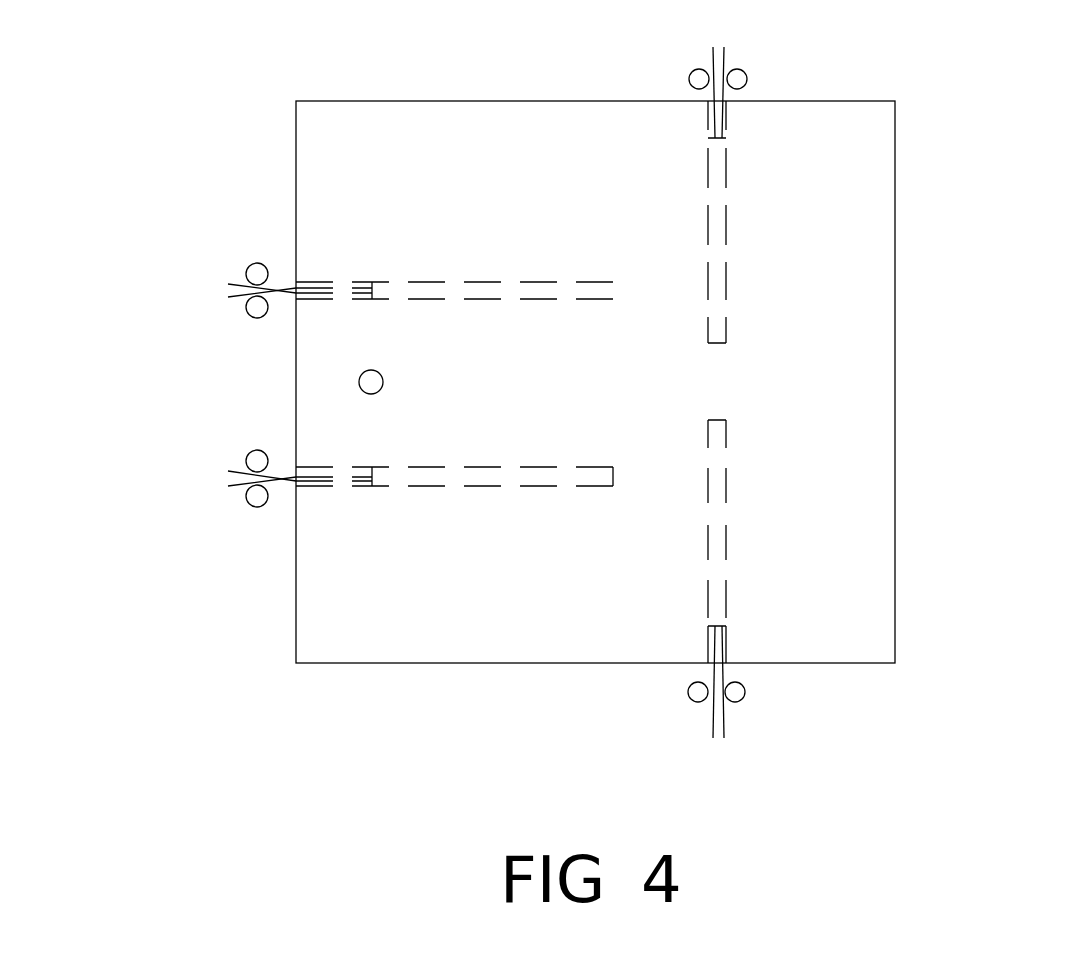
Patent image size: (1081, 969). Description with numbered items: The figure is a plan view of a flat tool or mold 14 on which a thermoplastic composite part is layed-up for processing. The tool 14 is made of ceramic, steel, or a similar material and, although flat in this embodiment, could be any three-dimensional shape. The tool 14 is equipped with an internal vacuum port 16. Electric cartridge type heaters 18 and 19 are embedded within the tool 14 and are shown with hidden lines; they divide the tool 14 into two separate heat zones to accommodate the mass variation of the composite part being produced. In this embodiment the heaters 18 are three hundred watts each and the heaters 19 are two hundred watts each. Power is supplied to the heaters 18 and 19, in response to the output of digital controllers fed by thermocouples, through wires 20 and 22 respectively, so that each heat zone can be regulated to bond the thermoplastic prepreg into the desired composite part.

The flat tool or mold 14 is at (887, 355).
The internal vacuum port 16 is at (367, 371).
The electric cartridge type heaters 18 is at (453, 282).
The electric cartridge type heaters 19 is at (727, 212).
The wires 20 is at (235, 285).
The wires 22 is at (712, 68).